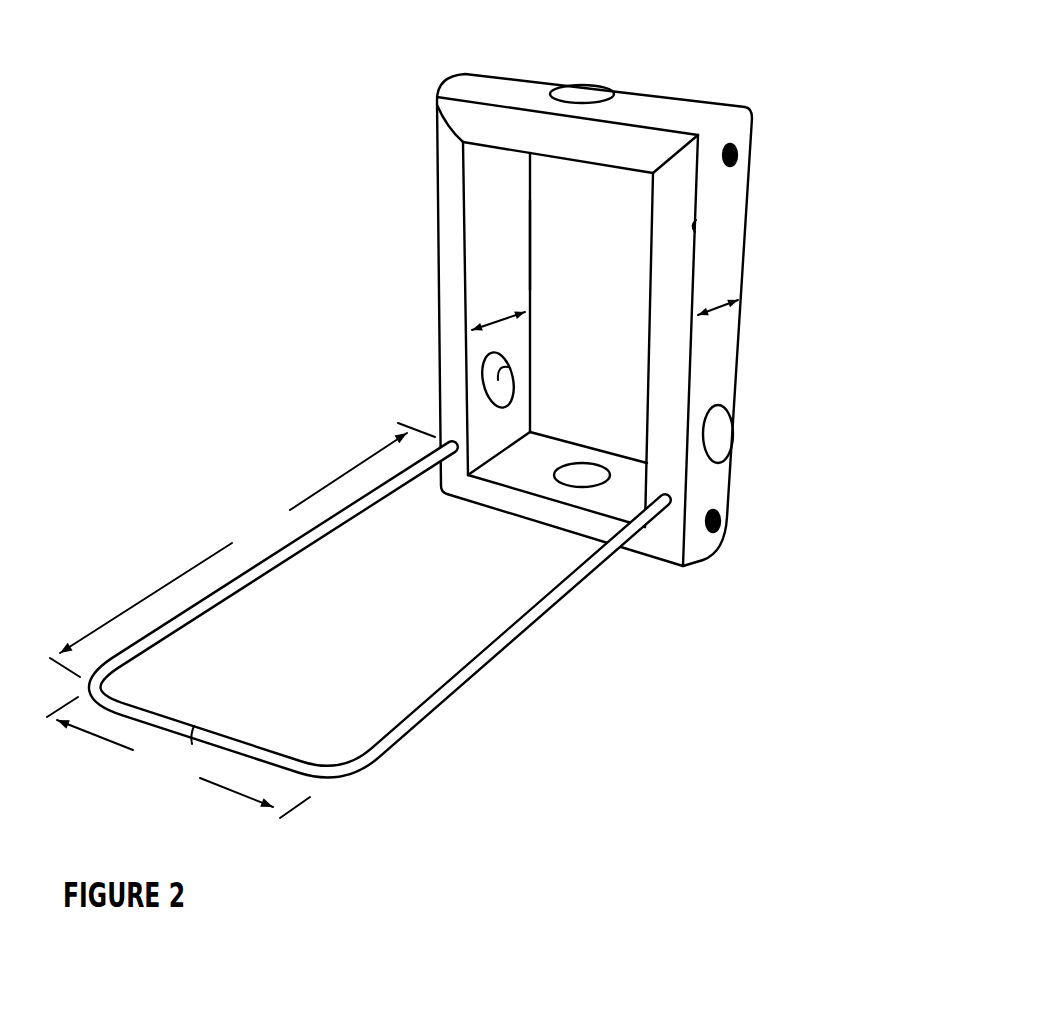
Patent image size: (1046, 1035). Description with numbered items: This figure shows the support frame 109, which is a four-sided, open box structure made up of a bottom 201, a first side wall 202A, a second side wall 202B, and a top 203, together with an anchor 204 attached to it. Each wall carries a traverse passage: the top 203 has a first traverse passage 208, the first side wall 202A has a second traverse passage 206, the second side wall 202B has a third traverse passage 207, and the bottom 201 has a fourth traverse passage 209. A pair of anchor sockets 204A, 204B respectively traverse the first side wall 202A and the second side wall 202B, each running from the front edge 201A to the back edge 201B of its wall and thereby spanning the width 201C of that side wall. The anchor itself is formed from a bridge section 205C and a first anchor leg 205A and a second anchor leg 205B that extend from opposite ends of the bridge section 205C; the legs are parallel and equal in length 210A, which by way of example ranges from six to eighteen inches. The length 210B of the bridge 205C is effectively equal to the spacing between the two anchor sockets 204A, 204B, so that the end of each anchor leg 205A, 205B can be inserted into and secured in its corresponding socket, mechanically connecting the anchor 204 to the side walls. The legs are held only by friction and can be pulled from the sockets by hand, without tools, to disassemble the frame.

The frame 109 is at (380, 274).
The bottom 201 is at (545, 516).
The front edge 201A is at (462, 143).
The back edge 201B is at (527, 203).
The width 201C is at (500, 322).
The first side wall 202A is at (696, 222).
The second side wall 202B is at (513, 242).
The top 203 is at (653, 107).
The anchor 204 is at (197, 733).
The first anchor socket 204A is at (665, 498).
The second anchor socket 204B is at (450, 438).
The first anchor leg 205A is at (253, 583).
The second anchor leg 205B is at (545, 616).
The bridge section 205C is at (163, 707).
The second traverse passage 206 is at (717, 428).
The third traverse passage 207 is at (493, 352).
The first traverse passage 208 is at (587, 97).
The fourth traverse passage 209 is at (577, 467).
The length of the anchor legs 210A is at (242, 550).
The length of the bridge 210B is at (178, 757).